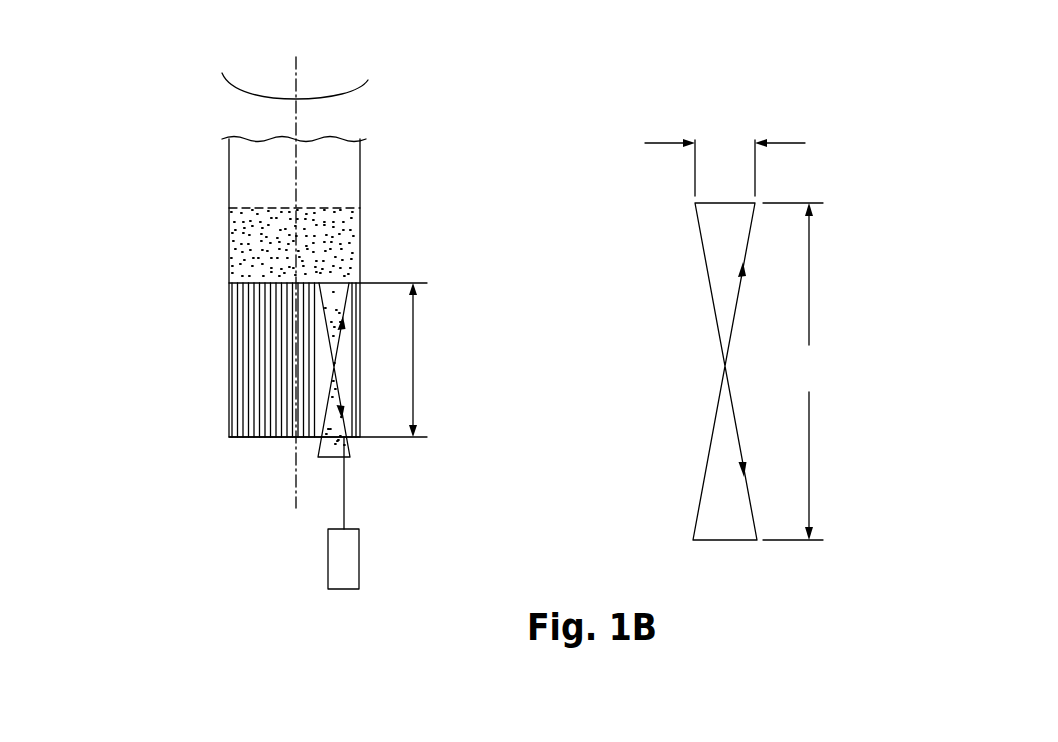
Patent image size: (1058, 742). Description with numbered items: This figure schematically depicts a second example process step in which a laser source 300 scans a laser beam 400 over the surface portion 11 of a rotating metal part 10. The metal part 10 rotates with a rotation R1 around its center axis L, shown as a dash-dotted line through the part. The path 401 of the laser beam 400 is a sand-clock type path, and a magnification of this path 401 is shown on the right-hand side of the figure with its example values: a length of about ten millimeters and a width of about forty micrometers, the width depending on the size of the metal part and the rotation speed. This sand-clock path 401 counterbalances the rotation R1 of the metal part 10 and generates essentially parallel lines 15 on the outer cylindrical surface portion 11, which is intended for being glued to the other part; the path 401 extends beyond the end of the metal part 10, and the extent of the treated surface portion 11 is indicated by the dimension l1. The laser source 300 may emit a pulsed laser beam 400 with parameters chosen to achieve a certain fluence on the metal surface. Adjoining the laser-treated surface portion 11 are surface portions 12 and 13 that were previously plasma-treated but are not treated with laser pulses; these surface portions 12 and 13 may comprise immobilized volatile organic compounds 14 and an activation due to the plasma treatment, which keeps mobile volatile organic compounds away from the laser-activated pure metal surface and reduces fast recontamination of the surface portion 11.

The metal part 10 is at (335, 148).
The surface portion 11 is at (229, 345).
The surface portion 12 is at (229, 240).
The surface portion 13 is at (258, 447).
The immobilized volatile organic compounds 14 is at (350, 225).
The parallel lines 15 is at (256, 405).
The laser source 300 is at (359, 565).
The laser beam 400 is at (344, 495).
The path 401 is at (348, 298).
The center axis L is at (296, 58).
The rotation R1 is at (343, 67).
The length of modified region l1 is at (420, 360).